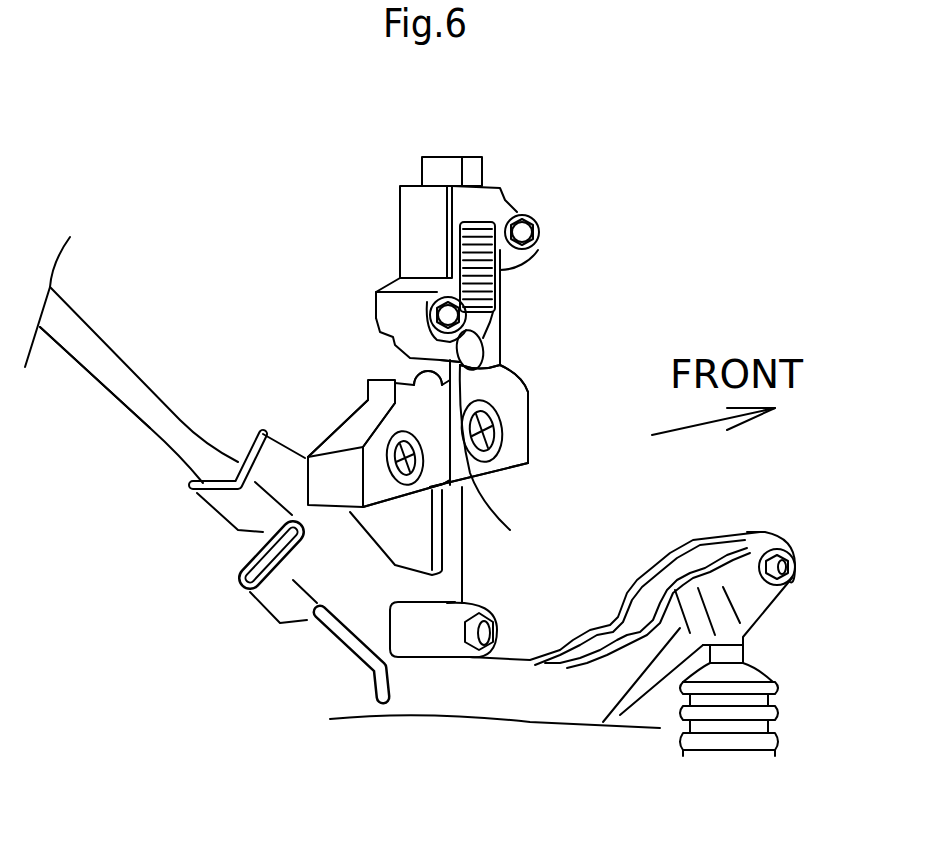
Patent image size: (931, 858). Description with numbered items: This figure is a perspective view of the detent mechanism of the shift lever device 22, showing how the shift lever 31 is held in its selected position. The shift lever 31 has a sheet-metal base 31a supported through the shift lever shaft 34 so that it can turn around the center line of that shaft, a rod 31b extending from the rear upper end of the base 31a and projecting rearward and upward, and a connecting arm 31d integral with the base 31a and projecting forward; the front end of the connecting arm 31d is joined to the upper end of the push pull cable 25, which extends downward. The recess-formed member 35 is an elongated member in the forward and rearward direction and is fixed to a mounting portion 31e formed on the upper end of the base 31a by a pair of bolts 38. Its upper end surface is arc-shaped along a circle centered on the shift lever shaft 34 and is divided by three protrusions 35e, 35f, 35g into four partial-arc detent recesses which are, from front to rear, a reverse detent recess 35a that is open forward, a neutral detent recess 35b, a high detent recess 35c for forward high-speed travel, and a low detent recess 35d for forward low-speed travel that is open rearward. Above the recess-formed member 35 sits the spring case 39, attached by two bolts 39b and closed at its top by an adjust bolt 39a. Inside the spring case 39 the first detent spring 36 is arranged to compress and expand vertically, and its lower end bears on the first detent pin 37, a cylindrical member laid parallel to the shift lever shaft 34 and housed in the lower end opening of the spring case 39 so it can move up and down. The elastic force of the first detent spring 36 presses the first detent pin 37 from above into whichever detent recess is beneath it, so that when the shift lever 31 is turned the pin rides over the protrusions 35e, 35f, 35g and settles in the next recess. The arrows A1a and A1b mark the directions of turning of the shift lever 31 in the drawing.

The shift lever device 22 is at (613, 300).
The push pull cable 25 is at (750, 753).
The shift lever 31 is at (128, 307).
The base 31a is at (490, 690).
The rod 31b is at (148, 417).
The connecting arm 31d is at (603, 722).
The mounting portion 31e is at (447, 528).
The shift lever shaft 34 is at (427, 627).
The recess-formed member 35 is at (337, 478).
The reverse detent recess 35a is at (478, 354).
The neutral detent recess 35b is at (482, 418).
The high detent recess 35c is at (392, 360).
The low detent recess 35d is at (358, 425).
The protrusion 35e is at (508, 393).
The protrusion 35f is at (470, 473).
The protrusion 35g is at (392, 381).
The first detent spring 36 is at (498, 266).
The first detent pin 37 is at (484, 347).
The bolts 38 is at (417, 487).
The spring case 39 is at (456, 224).
The adjust bolt 39a is at (433, 172).
The bolts 39b is at (537, 225).
The direction A1a is at (160, 355).
The direction A1b is at (117, 453).